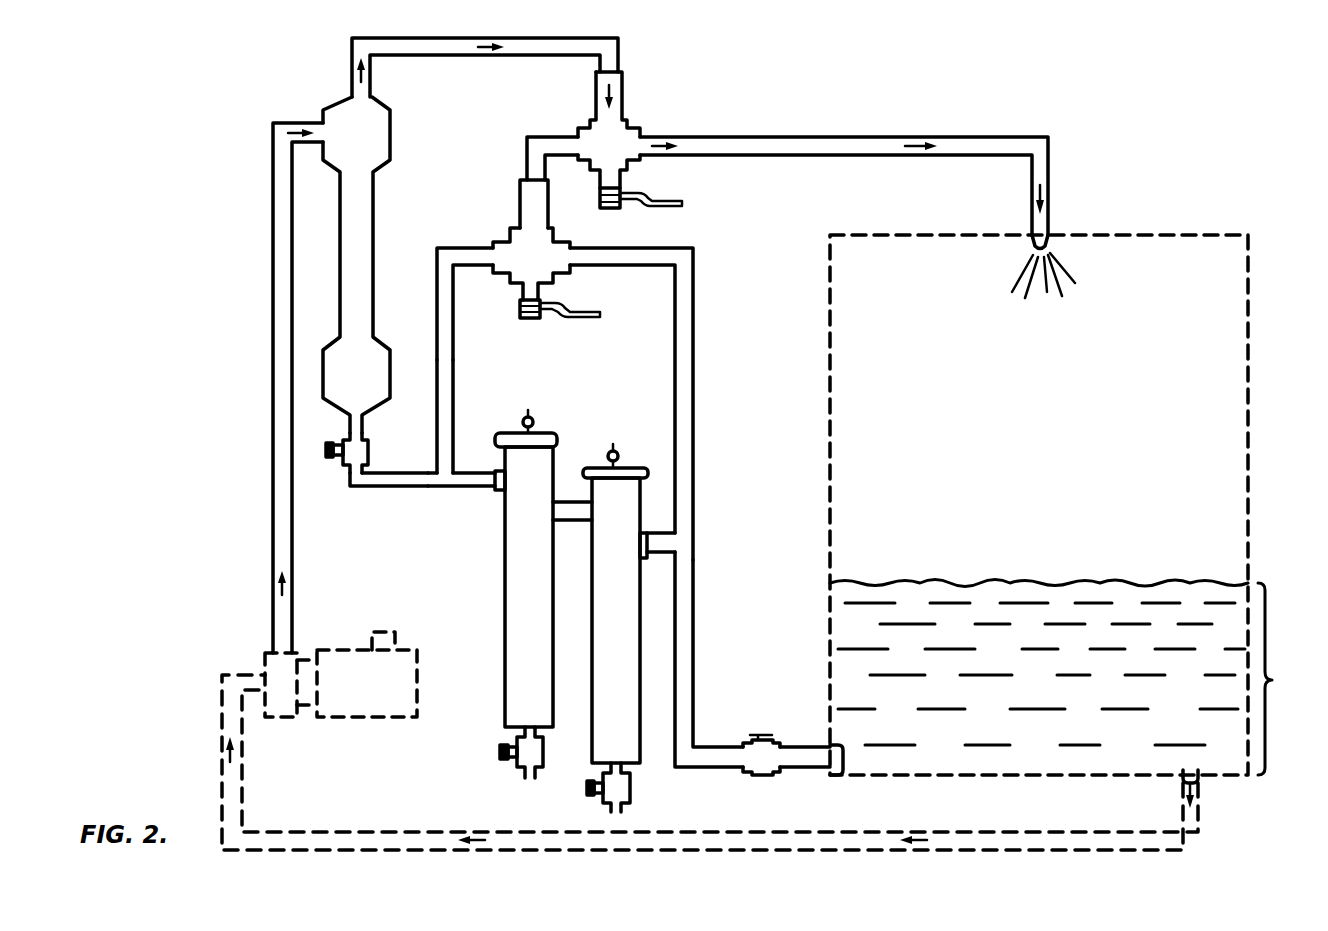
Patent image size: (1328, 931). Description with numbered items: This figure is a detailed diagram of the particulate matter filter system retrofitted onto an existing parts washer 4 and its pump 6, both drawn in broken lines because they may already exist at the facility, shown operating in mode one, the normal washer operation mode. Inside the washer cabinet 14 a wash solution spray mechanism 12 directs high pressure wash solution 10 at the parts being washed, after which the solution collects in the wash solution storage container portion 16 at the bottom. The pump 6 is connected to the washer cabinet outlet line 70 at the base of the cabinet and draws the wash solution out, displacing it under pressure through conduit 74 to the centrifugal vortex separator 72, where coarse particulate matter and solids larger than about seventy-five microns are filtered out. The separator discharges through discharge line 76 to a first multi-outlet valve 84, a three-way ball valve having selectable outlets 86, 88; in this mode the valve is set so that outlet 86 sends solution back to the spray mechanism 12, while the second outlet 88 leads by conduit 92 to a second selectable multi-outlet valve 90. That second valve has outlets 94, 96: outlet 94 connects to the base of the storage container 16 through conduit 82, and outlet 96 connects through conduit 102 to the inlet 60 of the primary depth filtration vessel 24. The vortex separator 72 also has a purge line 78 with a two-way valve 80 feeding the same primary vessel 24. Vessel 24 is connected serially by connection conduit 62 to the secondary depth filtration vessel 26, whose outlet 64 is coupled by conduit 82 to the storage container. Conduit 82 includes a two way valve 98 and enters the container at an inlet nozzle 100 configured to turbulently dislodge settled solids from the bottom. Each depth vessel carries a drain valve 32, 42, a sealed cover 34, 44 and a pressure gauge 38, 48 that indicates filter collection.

The washer 4 is at (1250, 440).
The pump 6 is at (370, 698).
The wash solution 10 is at (1048, 688).
The wash solution spray mechanism 12 is at (1053, 236).
The washer cabinet 14 is at (1052, 451).
The wash solution storage container portion 16 is at (1283, 679).
The depth filtration vessel 24 is at (543, 601).
The depth filtration vessel 26 is at (628, 645).
The two-way drain valve 32 is at (518, 768).
The cover 34 is at (556, 440).
The pressure gauge 38 is at (533, 418).
The drain valve 42 is at (605, 800).
The cover 44 is at (641, 468).
The pressure gauge 48 is at (616, 448).
The inlet 60 is at (500, 491).
The connection conduit 62 is at (568, 521).
The outlet 64 is at (642, 560).
The washer cabinet outlet line 70 is at (330, 830).
The centrifugal vortex separator 72 is at (372, 148).
The conduit 74 is at (272, 398).
The discharge line 76 is at (446, 56).
The purge line 78 is at (400, 487).
The two-way valve 80 is at (368, 450).
The conduit 82 is at (697, 672).
The first multi-outlet valve 84 is at (622, 160).
The outlet 86 is at (640, 130).
The outlet 88 is at (580, 130).
The second selectable multi-outlet valve 90 is at (545, 272).
The conduit 92 is at (527, 156).
The outlet 94 is at (570, 245).
The outlet 96 is at (498, 245).
The two way valve 98 is at (765, 775).
The inlet nozzle 100 is at (828, 748).
The conduit 102 is at (458, 362).